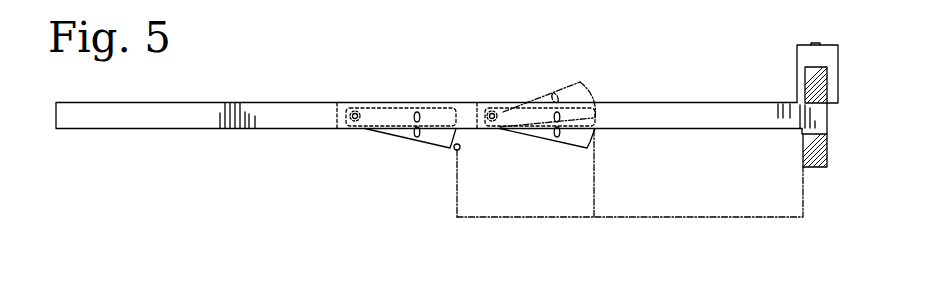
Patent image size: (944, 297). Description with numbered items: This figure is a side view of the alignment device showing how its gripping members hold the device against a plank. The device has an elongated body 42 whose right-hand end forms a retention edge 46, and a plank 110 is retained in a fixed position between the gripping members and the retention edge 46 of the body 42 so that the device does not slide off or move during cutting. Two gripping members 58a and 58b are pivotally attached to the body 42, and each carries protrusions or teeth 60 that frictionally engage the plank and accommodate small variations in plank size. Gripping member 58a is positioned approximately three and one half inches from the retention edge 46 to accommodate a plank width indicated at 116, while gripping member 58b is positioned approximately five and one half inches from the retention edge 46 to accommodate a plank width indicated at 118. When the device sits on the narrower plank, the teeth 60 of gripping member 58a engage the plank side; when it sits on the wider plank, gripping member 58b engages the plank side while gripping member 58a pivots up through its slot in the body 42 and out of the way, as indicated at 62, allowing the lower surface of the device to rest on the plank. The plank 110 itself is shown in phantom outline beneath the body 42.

The body 42 is at (240, 103).
The retention edge 46 is at (809, 66).
The gripping member 58a is at (532, 115).
The gripping member 58b is at (390, 117).
The protrusions or teeth 60 is at (453, 149).
The pivoted-up position of gripping member 62 is at (562, 82).
The plank 110 is at (700, 218).
The plank having a 3.5 inch width 116 is at (592, 192).
The plank having a 5.5 inch width 118 is at (455, 200).